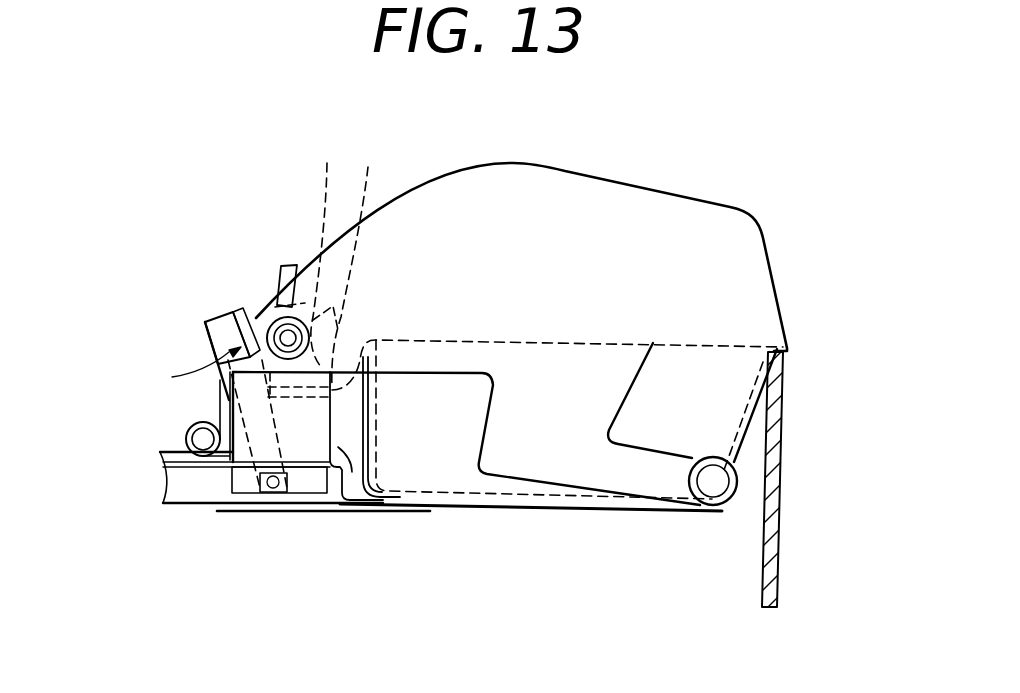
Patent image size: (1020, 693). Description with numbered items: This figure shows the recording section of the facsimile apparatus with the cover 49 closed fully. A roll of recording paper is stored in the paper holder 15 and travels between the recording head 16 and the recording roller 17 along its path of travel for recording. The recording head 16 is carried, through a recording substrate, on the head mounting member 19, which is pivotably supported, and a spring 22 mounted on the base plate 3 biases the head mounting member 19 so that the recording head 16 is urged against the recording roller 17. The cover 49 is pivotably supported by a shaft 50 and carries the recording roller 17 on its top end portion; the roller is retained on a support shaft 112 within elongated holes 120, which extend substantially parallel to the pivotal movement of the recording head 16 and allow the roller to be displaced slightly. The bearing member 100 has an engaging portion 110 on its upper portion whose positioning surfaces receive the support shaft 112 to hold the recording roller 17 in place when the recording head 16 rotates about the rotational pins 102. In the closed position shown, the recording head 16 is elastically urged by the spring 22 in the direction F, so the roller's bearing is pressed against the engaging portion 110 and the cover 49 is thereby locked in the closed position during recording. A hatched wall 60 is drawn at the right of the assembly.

The base plate 3 is at (226, 455).
The paper holder 15 is at (555, 514).
The recording head 16 is at (245, 318).
The recording roller 17 is at (307, 246).
The head mounting member 19 is at (203, 336).
The spring 22 is at (188, 426).
The cover 49 is at (637, 200).
The shaft 50 is at (714, 508).
The wall 60 is at (778, 503).
The bearing member 100 is at (364, 514).
The rotational pins 102 is at (284, 494).
The engaging portion 110 is at (525, 316).
The support shaft 112 is at (303, 292).
The elongated holes 120 is at (257, 320).
The direction F is at (194, 371).